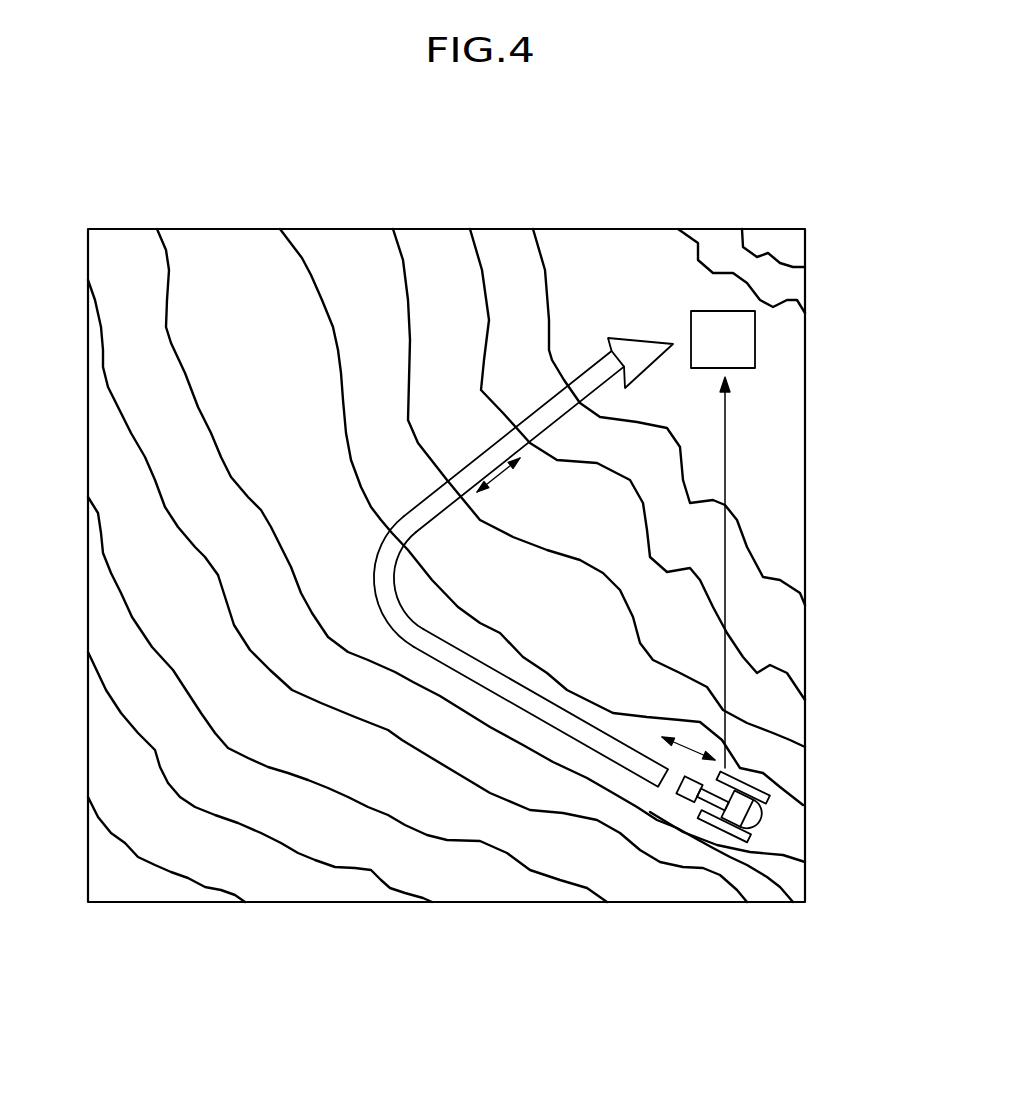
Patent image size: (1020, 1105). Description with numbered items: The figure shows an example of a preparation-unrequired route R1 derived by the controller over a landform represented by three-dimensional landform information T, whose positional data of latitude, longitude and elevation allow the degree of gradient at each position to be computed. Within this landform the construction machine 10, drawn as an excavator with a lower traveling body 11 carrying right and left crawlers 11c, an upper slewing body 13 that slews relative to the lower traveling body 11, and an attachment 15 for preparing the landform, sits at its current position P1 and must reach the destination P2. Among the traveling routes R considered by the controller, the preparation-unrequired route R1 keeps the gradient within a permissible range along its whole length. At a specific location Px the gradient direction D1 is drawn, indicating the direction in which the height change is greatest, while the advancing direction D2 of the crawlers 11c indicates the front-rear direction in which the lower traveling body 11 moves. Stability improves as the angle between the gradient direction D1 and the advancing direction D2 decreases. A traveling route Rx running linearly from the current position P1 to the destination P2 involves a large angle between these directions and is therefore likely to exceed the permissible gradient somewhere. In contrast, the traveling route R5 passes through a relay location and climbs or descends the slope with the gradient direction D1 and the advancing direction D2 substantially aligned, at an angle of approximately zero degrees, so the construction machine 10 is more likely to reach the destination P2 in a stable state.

The three-dimensional landform information T is at (108, 206).
The traveling routes R is at (486, 473).
The preparation-unrequired route R1 is at (486, 562).
The traveling route R5 is at (377, 556).
The specific location Px is at (482, 455).
The current position P1 is at (760, 790).
The destination P2 is at (706, 322).
The traveling route Rx is at (725, 450).
The gradient direction D1 is at (498, 480).
The advancing direction of the crawler D2 is at (688, 748).
The construction machine 10 is at (775, 909).
The lower traveling body 11 is at (806, 881).
The crawlers 11c is at (747, 843).
The upper slewing body 13 is at (718, 813).
The attachment 15 is at (683, 775).